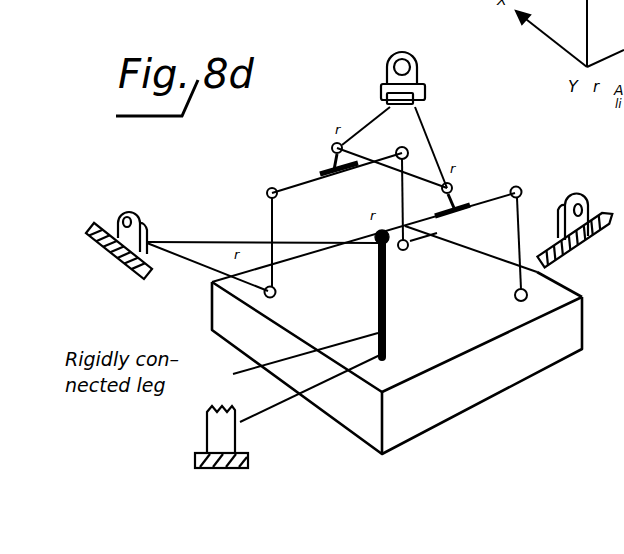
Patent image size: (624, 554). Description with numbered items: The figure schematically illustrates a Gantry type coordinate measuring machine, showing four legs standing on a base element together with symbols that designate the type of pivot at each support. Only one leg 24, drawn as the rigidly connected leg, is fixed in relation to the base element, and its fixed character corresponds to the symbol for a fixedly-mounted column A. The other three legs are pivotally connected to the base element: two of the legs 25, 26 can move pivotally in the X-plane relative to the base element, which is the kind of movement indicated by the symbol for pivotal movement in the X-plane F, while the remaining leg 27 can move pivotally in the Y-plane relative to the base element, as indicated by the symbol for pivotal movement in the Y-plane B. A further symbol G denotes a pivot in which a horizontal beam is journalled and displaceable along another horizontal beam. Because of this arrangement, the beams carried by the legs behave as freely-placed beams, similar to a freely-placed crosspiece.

The leg 24 is at (387, 292).
The leg 25 is at (270, 241).
The leg 26 is at (401, 184).
The leg 27 is at (526, 204).
The pivot symbol for pivotal movement in the X-plane F is at (120, 236).
The pivot symbol for journalled, displaceable horizontal beam G is at (394, 120).
The pivot symbol for pivotal movement in the Y-plane B is at (576, 226).
The fixedly-mounted column symbol A is at (224, 428).